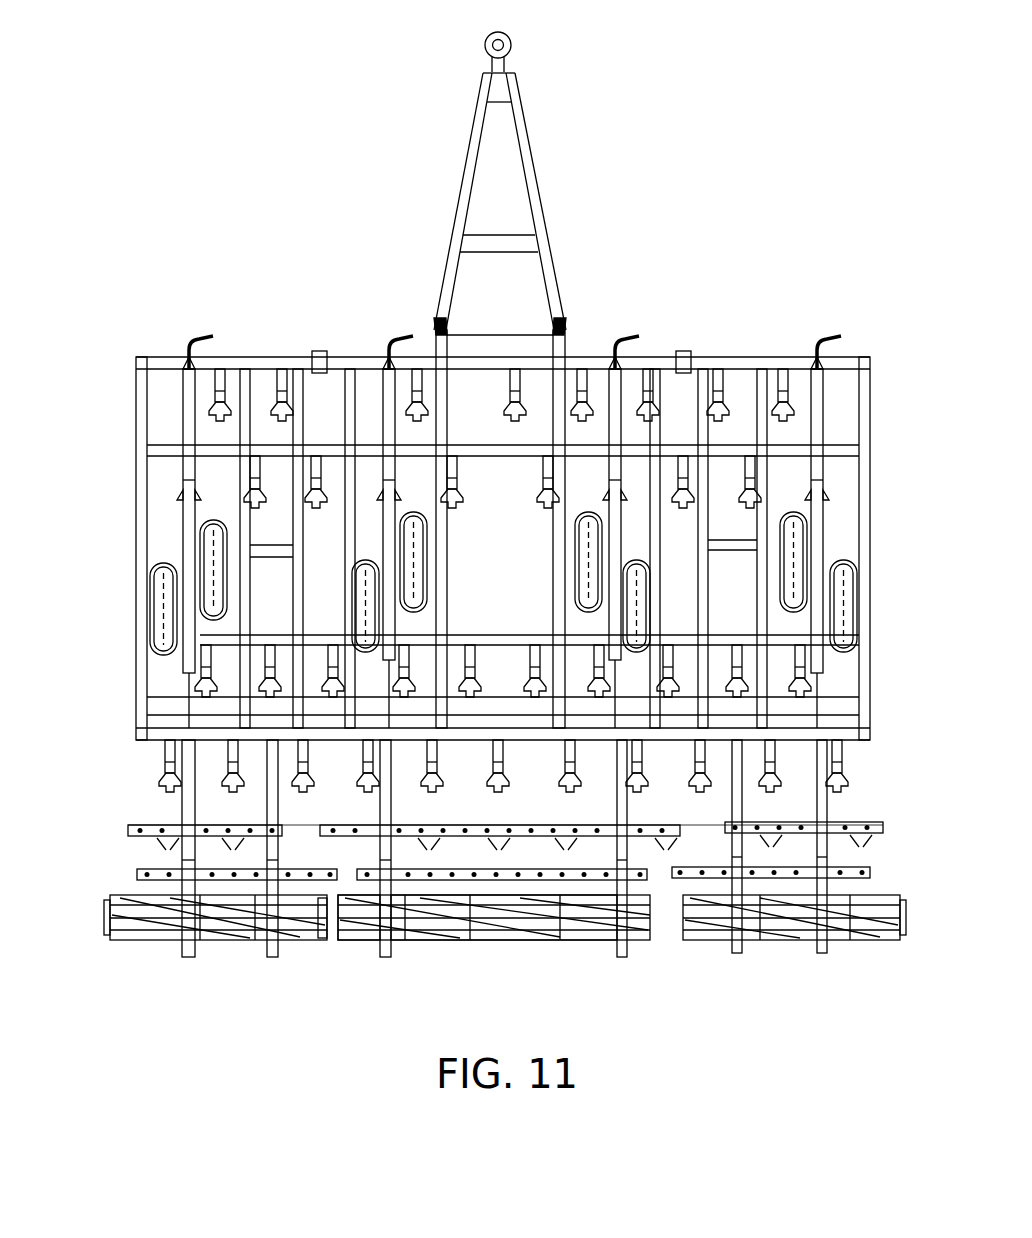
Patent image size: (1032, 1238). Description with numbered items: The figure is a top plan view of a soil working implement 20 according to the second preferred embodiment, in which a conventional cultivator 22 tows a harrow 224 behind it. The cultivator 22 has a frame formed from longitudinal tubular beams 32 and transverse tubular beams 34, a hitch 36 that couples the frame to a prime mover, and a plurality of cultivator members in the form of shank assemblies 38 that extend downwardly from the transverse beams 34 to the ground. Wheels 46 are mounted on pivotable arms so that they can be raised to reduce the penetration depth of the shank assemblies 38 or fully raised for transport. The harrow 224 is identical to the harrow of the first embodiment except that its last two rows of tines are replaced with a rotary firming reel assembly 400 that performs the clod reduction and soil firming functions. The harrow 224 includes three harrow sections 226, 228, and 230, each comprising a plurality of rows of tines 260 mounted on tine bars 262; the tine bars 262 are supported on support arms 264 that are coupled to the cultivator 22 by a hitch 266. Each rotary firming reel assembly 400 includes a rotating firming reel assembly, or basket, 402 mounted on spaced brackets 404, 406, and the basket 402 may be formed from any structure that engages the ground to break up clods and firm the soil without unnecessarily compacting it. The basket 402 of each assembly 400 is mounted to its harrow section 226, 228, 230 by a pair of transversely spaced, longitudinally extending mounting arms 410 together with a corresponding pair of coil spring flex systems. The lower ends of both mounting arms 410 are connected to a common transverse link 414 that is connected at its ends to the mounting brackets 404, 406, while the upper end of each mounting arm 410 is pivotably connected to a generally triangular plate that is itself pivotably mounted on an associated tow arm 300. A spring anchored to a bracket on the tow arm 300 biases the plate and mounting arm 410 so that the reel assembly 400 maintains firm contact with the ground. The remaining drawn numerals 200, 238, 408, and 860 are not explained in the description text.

The harrow implement 20 is at (880, 356).
The cultivator 22 is at (745, 355).
The longitudinal tubular beam 32 is at (136, 500).
The transverse tubular beam 34 is at (613, 354).
The hitch 36 is at (527, 127).
The shank assembly 38 is at (508, 404).
The wheel 46 is at (212, 540).
The support leg 200 is at (392, 790).
The harrow 224 is at (864, 787).
The harrow section 226 is at (122, 866).
The harrow section 228 is at (690, 828).
The harrow section 230 is at (874, 820).
The tine 238 is at (645, 775).
The tine 260 is at (124, 846).
The tine bar 262 is at (140, 823).
The support arm 264 is at (182, 858).
The hitch 266 is at (260, 747).
The tow arm 300 is at (742, 790).
The rotary firming reel assembly 400 is at (160, 955).
The rotating firming reel assembly 402 is at (222, 945).
The bracket 404 is at (108, 918).
The bracket 406 is at (327, 930).
The diagonal brace 408 is at (246, 932).
The mounting arm 410 is at (195, 890).
The transverse link 414 is at (212, 940).
The roller link 860 is at (487, 838).